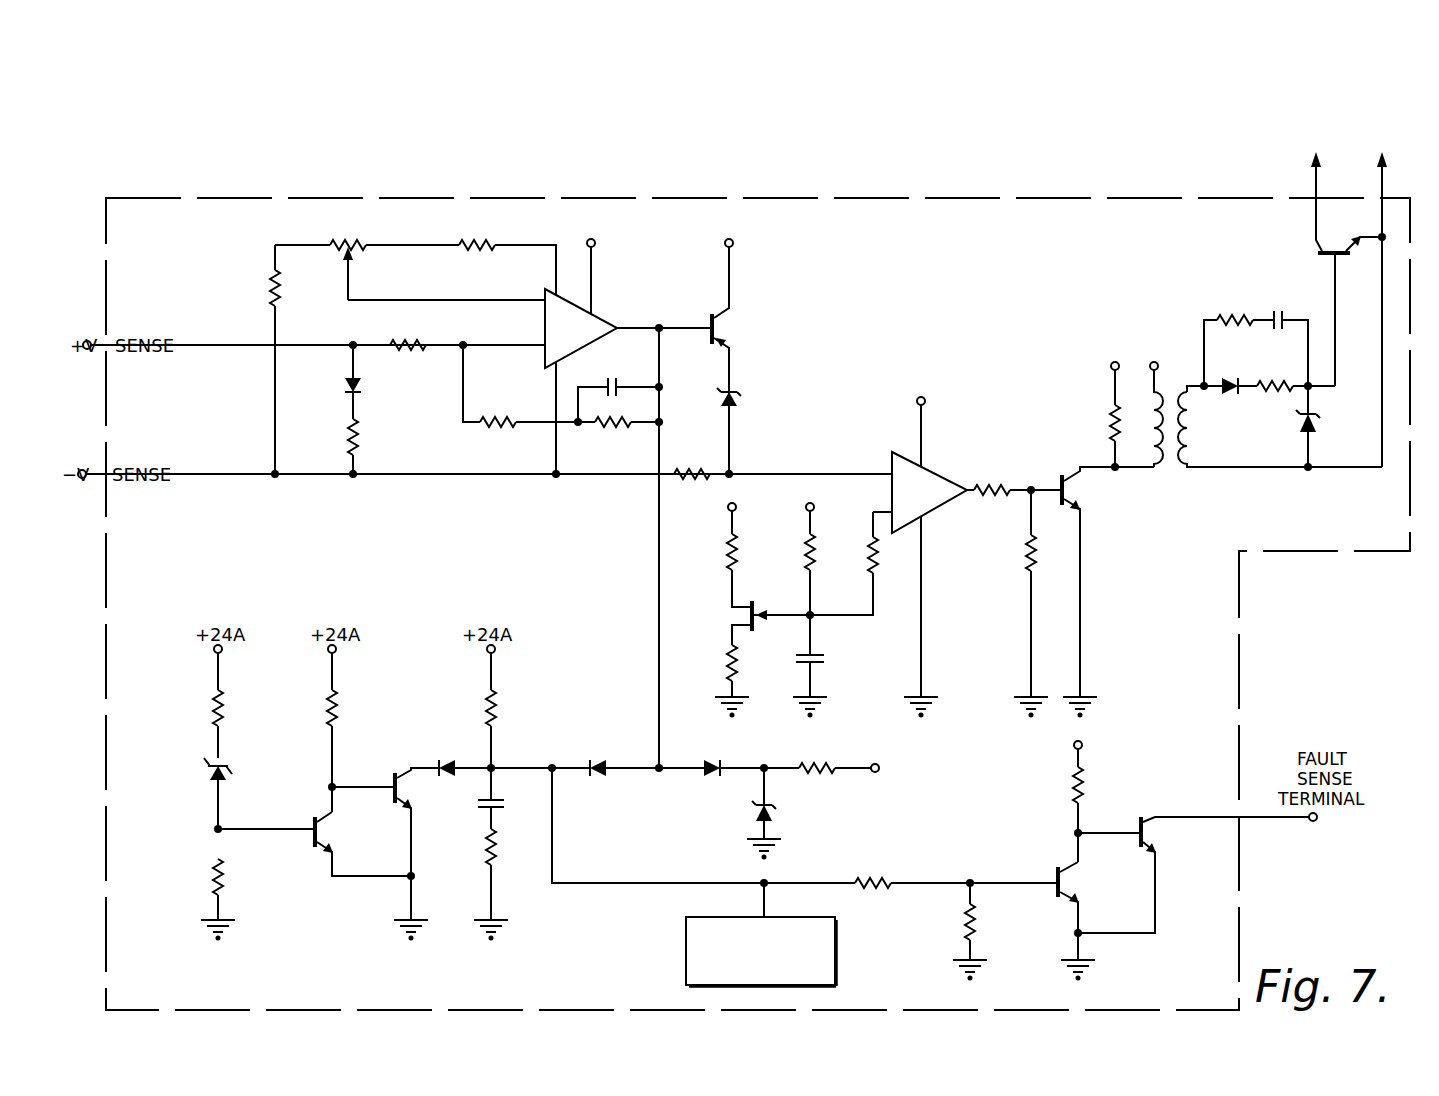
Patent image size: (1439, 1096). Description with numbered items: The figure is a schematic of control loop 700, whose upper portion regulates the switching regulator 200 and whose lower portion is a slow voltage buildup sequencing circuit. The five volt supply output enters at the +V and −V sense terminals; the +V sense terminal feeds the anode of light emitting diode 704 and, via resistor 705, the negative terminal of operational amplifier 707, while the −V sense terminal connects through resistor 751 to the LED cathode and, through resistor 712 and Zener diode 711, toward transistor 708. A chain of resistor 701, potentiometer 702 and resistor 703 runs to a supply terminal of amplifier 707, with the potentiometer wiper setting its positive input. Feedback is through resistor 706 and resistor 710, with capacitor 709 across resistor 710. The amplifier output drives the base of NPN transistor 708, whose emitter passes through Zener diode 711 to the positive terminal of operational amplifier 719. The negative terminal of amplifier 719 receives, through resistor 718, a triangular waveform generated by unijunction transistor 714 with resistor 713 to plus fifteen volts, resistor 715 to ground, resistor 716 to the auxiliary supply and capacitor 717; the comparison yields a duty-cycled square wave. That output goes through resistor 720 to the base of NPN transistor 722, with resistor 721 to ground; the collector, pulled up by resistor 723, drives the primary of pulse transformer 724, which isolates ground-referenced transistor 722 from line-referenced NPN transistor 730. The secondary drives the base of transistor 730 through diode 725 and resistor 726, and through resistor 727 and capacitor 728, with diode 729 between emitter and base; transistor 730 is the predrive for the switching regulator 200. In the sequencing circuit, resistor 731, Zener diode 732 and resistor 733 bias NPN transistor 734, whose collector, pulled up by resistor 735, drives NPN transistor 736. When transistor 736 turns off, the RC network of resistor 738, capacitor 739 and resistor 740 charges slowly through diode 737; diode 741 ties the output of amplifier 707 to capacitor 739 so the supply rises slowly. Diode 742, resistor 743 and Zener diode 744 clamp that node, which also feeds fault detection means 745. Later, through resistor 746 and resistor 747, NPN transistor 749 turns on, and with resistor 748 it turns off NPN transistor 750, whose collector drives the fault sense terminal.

The switching regulator 200 is at (1367, 157).
The control loop 700 is at (383, 997).
The resistor 701 is at (254, 359).
The potentiometer 702 is at (410, 259).
The resistor 703 is at (507, 256).
The light emitting diode 704 is at (376, 382).
The resistor 705 is at (409, 334).
The resistor 706 is at (520, 386).
The operational amplifier 707 is at (600, 313).
The NPN transistor 708 is at (714, 347).
The capacitor 709 is at (618, 389).
The resistor 710 is at (618, 435).
The Zener diode 711 is at (747, 401).
The resistor 712 is at (692, 463).
The resistor 713 is at (740, 552).
The unijunction transistor 714 is at (755, 614).
The resistor 715 is at (748, 681).
The resistor 716 is at (819, 576).
The capacitor 717 is at (827, 684).
The resistor 718 is at (844, 563).
The operational amplifier 719 is at (891, 454).
The resistor 720 is at (1018, 479).
The resistor 721 is at (1018, 603).
The NPN transistor 722 is at (1060, 473).
The resistor 723 is at (1102, 405).
The transformer 724 is at (1260, 417).
The diode 725 is at (1230, 397).
The resistor 726 is at (1295, 374).
The resistor 727 is at (1239, 350).
The capacitor 728 is at (1283, 337).
The diode 729 is at (1327, 426).
The NPN transistor 730 is at (1318, 252).
The resistor 731 is at (239, 701).
The Zener diode 732 is at (195, 795).
The resistor 733 is at (233, 899).
The NPN transistor 734 is at (313, 824).
The resistor 735 is at (360, 728).
The NPN transistor 736 is at (393, 801).
The diode 737 is at (459, 756).
The resistor 738 is at (512, 722).
The capacitor 739 is at (510, 811).
The resistor 740 is at (506, 884).
The diode 741 is at (599, 756).
The diode 742 is at (711, 756).
The resistor 743 is at (860, 758).
The Zener diode 744 is at (781, 813).
The fault detection means 745 is at (686, 959).
The resistor 746 is at (955, 870).
The resistor 747 is at (955, 931).
The resistor 748 is at (1083, 799).
The NPN transistor 749 is at (1056, 871).
The NPN transistor 750 is at (1140, 820).
The resistor 751 is at (377, 446).